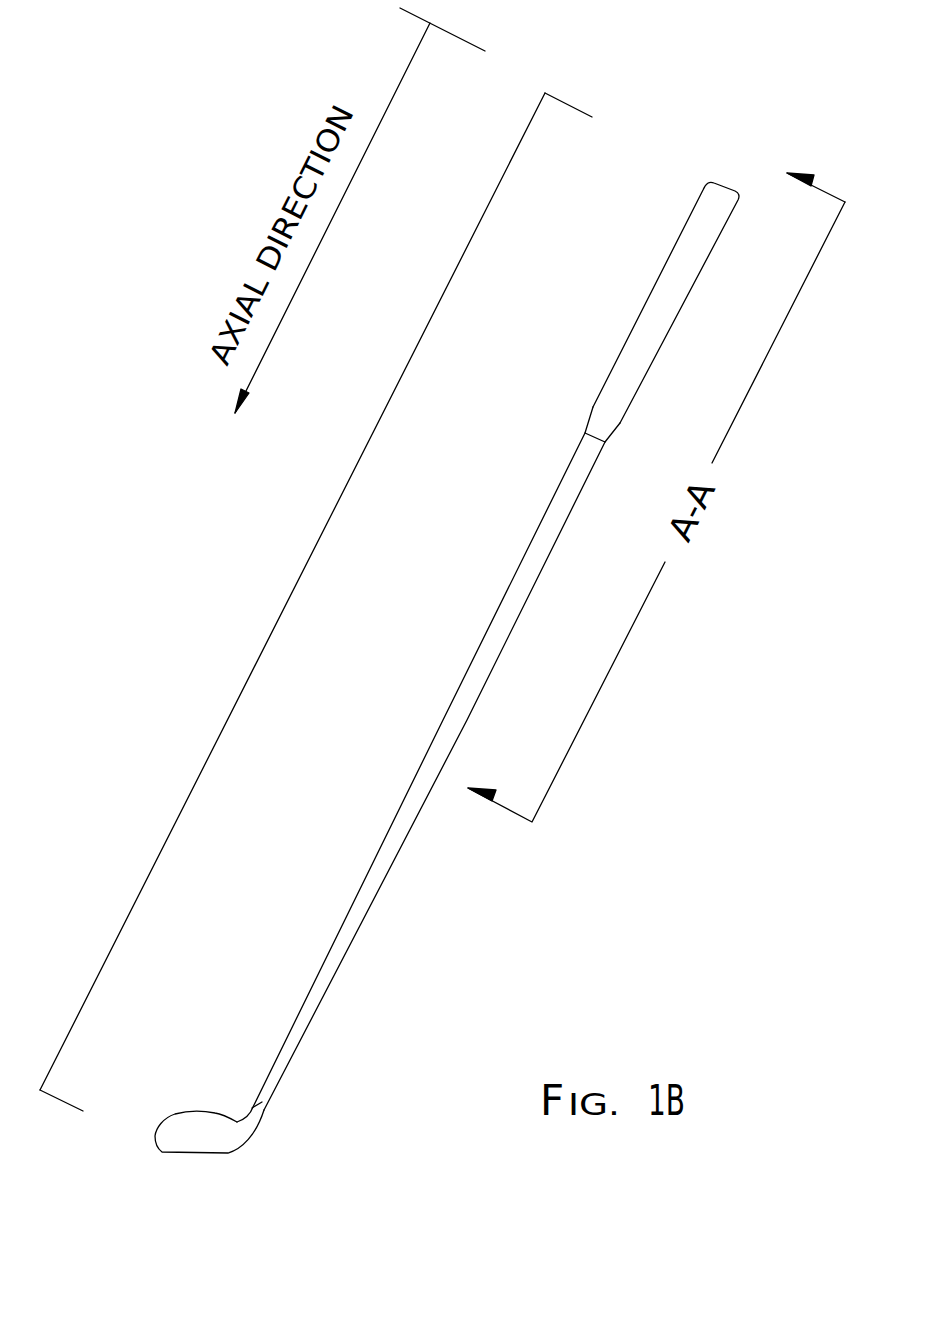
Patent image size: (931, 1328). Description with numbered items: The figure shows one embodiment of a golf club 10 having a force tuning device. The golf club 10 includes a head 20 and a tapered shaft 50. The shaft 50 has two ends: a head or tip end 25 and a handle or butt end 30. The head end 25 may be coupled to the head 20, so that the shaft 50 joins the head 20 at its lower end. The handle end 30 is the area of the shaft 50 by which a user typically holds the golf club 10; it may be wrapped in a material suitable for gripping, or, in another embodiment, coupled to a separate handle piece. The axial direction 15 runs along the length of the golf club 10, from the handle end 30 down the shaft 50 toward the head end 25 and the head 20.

The golf club 10 is at (237, 707).
The axial direction 15 is at (330, 225).
The head 20 is at (212, 1112).
The head end 25 is at (270, 1097).
The handle end 30 is at (650, 300).
The tapered shaft 50 is at (387, 870).